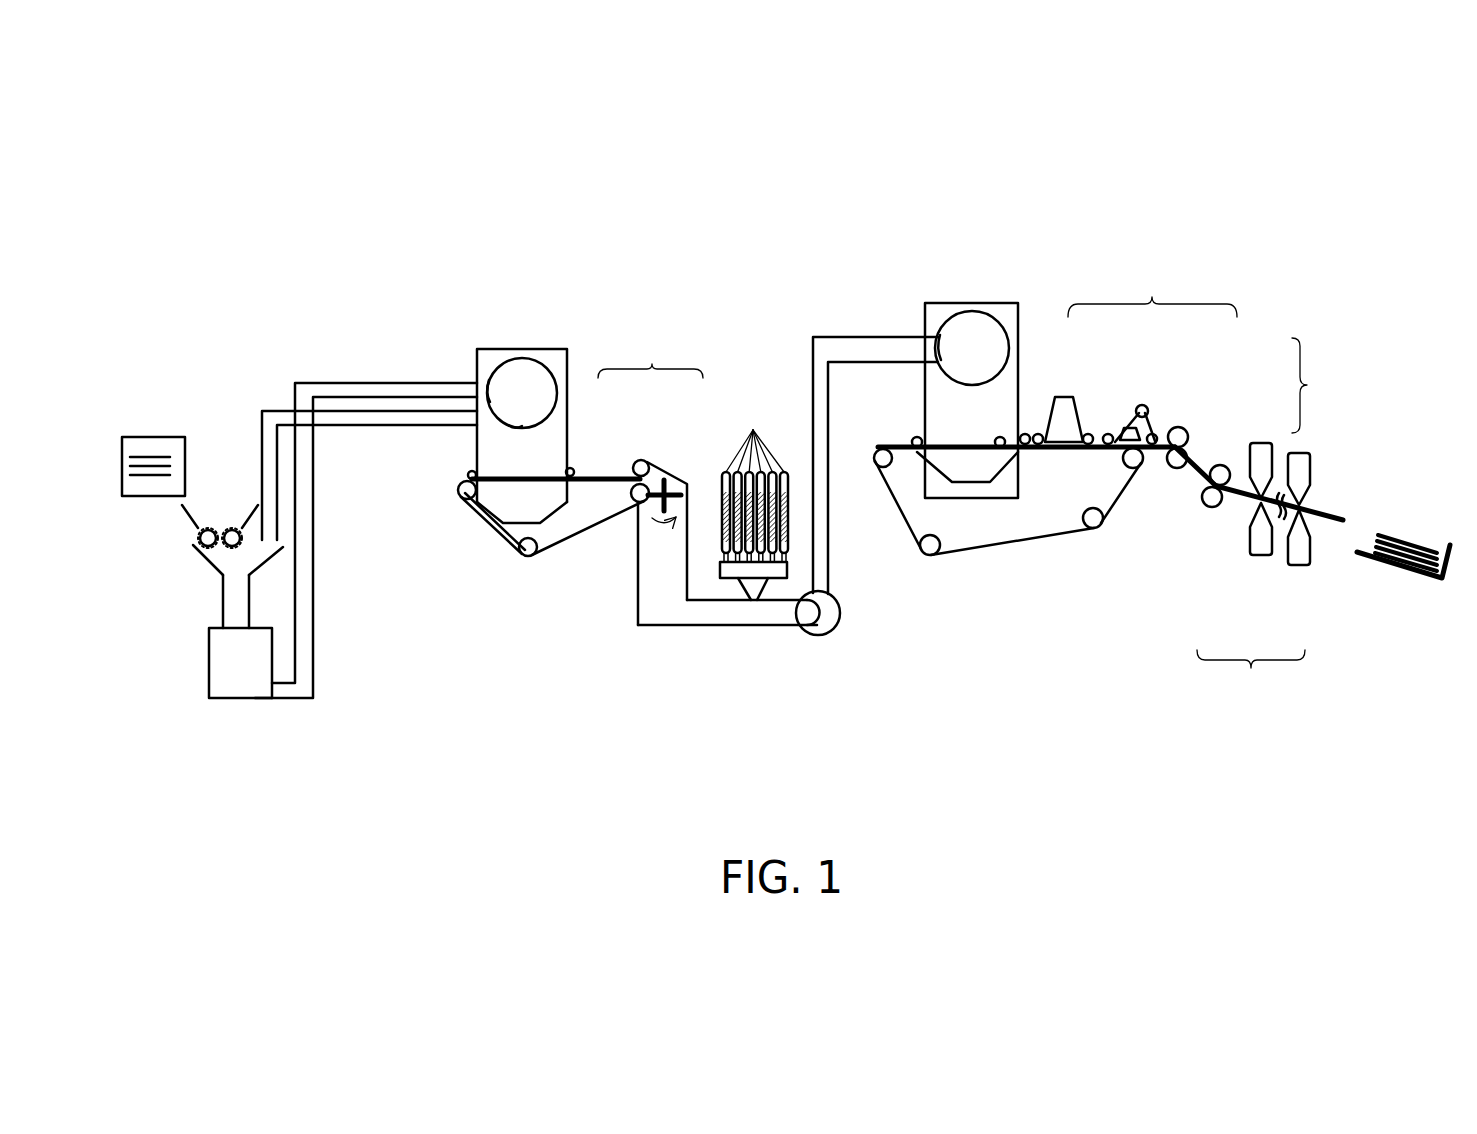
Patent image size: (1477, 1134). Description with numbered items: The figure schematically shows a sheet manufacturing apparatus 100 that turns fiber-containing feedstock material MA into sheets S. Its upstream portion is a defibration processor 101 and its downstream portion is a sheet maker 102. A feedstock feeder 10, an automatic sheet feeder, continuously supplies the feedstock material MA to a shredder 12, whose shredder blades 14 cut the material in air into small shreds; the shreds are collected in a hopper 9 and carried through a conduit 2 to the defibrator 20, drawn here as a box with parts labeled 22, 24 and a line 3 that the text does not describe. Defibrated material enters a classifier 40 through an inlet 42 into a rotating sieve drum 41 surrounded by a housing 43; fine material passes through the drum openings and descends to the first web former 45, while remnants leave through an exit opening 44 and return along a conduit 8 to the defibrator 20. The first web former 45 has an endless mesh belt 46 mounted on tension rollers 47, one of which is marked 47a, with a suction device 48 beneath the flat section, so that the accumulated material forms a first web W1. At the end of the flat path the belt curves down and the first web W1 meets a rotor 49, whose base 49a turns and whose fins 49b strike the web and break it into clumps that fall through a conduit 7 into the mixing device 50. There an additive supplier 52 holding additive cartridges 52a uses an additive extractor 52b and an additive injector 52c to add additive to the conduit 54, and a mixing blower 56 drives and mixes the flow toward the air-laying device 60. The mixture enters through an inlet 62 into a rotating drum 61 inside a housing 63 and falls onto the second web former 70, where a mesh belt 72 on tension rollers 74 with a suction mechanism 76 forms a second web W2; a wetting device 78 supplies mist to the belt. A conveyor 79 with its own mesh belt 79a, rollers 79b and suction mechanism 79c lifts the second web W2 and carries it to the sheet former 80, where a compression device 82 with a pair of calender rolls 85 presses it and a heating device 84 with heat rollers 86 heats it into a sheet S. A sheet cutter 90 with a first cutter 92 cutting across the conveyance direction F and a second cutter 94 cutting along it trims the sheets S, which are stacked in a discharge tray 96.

The sheet manufacturing apparatus 100 is at (737, 211).
The defibration processor 101 is at (332, 254).
The sheet maker 102 is at (1140, 241).
The feedstock material MA is at (143, 457).
The feedstock feeder 10 is at (175, 437).
The shredder 12 is at (167, 533).
The shredder blades 14 is at (224, 550).
The hopper 9 is at (218, 570).
The conduit 2 is at (223, 612).
The defibrating unit 22 is at (237, 630).
The outlet 24 is at (267, 694).
The defibrator 20 is at (205, 709).
The pipe 3 is at (315, 678).
The conduit 8 is at (263, 410).
The classifier 40 is at (589, 348).
The drum 41 is at (507, 362).
The inlet 42 is at (497, 390).
The housing 43 is at (552, 349).
The exit opening 44 is at (518, 425).
The first web former 45 is at (450, 566).
The mesh belt 46 is at (492, 528).
The tension rollers 47 is at (458, 490).
The stretching roller 47a is at (635, 502).
The suction device 48 is at (510, 525).
The rotor 49 is at (650, 353).
The base 49a is at (667, 488).
The fins 49b is at (648, 482).
The first web W1 is at (478, 472).
The conduit 7 is at (645, 613).
The mixing device 50 is at (736, 670).
The additive supplier 52 is at (734, 375).
The additive cartridges 52a is at (755, 437).
The additive extractor 52b is at (718, 567).
The additive injector 52c is at (740, 588).
The conduit 54 is at (832, 337).
The mixing blower 56 is at (820, 636).
The air-laying device 60 is at (1052, 304).
The drum 61 is at (947, 317).
The inlet 62 is at (943, 340).
The housing 63 is at (1000, 303).
The second web former 70 is at (1109, 547).
The mesh belt 72 is at (902, 452).
The tension rollers 74 is at (883, 468).
The suction mechanism 76 is at (993, 484).
The wetting device 78 is at (1058, 395).
The conveyor 79 is at (1152, 354).
The mesh belt 79a is at (1120, 432).
The rollers 79b is at (1148, 408).
The suction mechanism 79c is at (1135, 428).
The second web W2 is at (1012, 452).
The sheet former 80 is at (1318, 385).
The compression device 82 is at (1194, 416).
The heating device 84 is at (1228, 456).
The calender rolls 85 is at (1167, 452).
The heat rollers 86 is at (1210, 483).
The sheet cutter 90 is at (1251, 676).
The first cutter 92 is at (1241, 547).
The second cutter 94 is at (1279, 564).
The discharge tray 96 is at (1447, 543).
The sheet S is at (1415, 542).
The conveyance direction F is at (1373, 509).